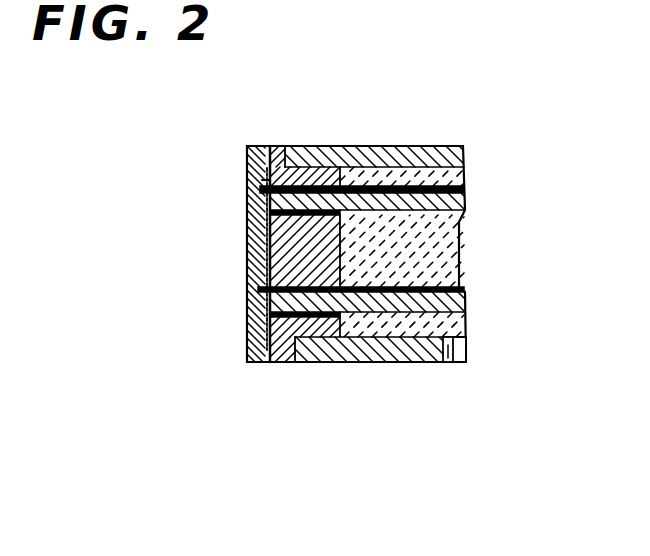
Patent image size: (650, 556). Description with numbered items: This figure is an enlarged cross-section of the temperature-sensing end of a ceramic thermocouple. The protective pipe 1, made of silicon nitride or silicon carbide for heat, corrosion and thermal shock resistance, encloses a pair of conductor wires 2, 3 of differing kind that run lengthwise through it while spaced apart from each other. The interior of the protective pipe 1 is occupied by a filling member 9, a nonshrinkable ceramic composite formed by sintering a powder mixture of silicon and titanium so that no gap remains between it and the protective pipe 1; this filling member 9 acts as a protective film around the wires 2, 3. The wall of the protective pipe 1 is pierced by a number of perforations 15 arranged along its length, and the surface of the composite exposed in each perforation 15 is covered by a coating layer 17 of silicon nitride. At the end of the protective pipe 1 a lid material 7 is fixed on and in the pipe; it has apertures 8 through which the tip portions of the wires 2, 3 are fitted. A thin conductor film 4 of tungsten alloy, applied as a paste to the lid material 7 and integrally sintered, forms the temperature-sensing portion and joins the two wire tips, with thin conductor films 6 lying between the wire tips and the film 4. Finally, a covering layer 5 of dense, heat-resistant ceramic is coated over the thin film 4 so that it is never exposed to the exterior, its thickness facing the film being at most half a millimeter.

The protective pipe 1 is at (378, 147).
The conductor wire 2 is at (421, 176).
The conductor wire 3 is at (420, 315).
The thin conductor film 4 is at (258, 264).
The covering layer 5 is at (265, 296).
The thin conductor film 6 is at (262, 181).
The lid material 7 is at (280, 160).
The aperture 8 is at (322, 186).
The filling member 9 is at (436, 156).
The perforation 15 is at (444, 363).
The coating layer 17 is at (457, 363).